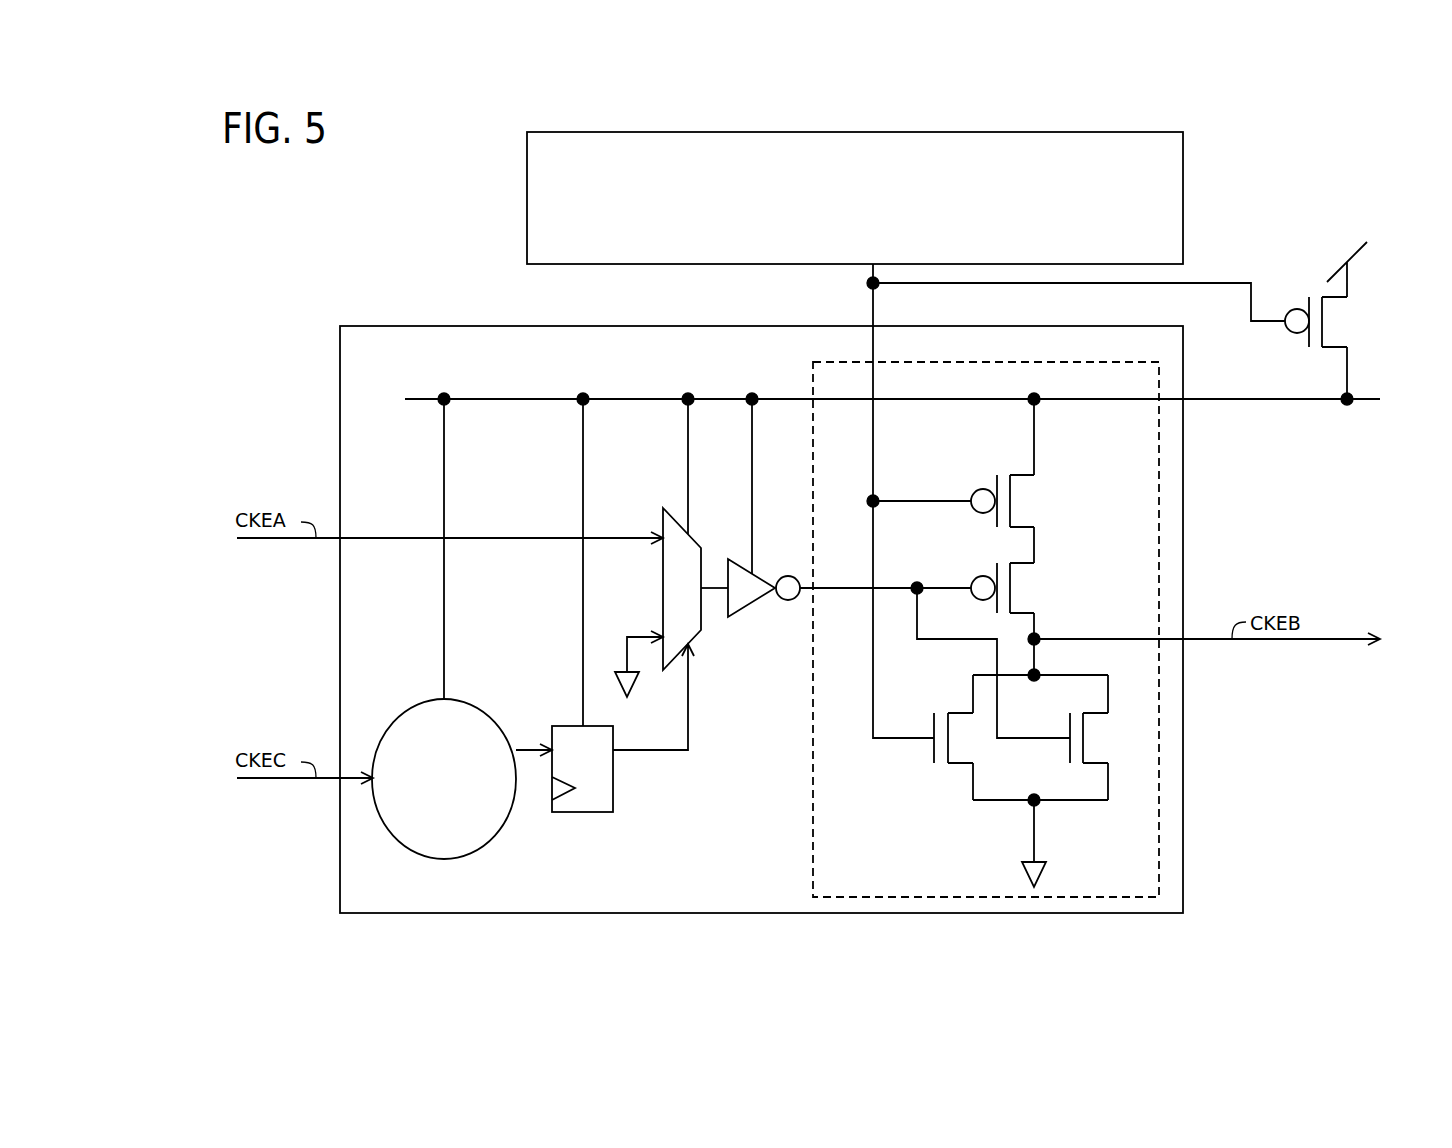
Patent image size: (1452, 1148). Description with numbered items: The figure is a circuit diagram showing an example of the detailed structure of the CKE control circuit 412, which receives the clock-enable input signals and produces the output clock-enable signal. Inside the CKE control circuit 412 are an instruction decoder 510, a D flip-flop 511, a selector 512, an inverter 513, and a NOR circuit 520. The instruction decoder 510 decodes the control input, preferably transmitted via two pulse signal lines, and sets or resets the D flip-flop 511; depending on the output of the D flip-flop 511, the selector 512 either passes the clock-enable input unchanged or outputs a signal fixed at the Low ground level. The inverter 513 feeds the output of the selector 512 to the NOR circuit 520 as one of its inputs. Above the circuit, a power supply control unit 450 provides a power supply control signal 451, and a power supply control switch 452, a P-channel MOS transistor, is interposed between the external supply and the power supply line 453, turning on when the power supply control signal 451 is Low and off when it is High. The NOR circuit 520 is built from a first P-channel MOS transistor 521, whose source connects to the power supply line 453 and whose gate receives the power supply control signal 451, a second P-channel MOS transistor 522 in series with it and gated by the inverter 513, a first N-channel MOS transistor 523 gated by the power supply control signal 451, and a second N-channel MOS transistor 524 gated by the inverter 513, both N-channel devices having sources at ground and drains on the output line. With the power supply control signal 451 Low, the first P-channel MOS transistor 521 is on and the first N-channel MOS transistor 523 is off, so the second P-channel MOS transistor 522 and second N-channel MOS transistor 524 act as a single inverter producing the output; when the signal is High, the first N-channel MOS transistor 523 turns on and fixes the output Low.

The CKE control circuit 412 is at (383, 326).
The power supply control unit 450 is at (590, 132).
The power supply control signal 451 is at (873, 310).
The power supply control switch 452 is at (1309, 297).
The power supply line 453 is at (1260, 400).
The instruction decoder 510 is at (477, 848).
The D flip-flop 511 is at (580, 812).
The selector 512 is at (663, 520).
The inverter 513 is at (748, 605).
The NOR circuit 520 is at (813, 850).
The first P-channel MOS transistor 521 is at (997, 482).
The second P-channel MOS transistor 522 is at (997, 570).
The first N-channel MOS transistor 523 is at (934, 755).
The second N-channel MOS transistor 524 is at (1070, 757).